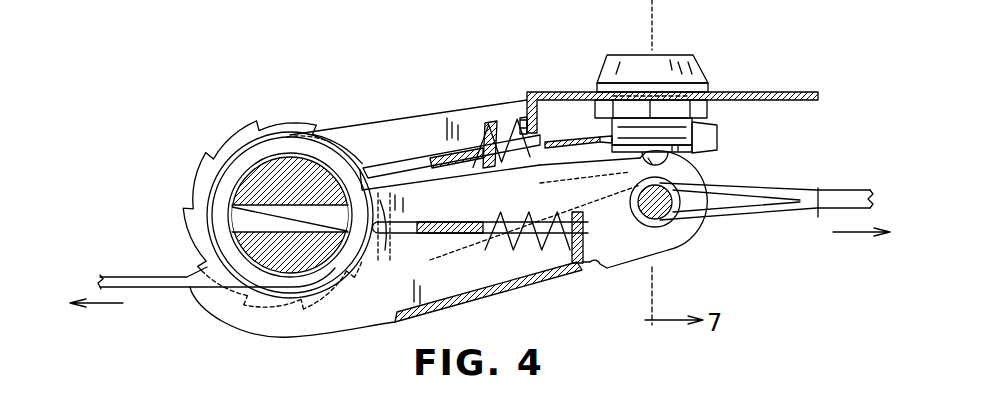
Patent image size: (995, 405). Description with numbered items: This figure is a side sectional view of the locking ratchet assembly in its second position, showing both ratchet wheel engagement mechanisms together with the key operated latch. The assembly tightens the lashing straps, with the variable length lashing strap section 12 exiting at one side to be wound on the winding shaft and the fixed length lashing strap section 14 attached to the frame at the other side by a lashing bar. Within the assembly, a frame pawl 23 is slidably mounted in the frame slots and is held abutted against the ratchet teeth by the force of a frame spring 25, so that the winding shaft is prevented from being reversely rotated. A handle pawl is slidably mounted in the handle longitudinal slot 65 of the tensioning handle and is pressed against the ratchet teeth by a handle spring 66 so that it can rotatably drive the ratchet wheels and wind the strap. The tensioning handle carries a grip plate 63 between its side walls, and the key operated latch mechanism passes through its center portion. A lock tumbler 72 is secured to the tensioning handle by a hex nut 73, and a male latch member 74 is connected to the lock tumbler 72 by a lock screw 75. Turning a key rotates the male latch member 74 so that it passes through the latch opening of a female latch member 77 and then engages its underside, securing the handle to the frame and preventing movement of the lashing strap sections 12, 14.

The variable length lashing strap section 12 is at (130, 277).
The fixed length lashing strap section 14 is at (835, 190).
The frame pawl 23 is at (398, 318).
The frame spring 25 is at (550, 270).
The grip plate 63 is at (806, 92).
The handle longitudinal slot 65 is at (397, 162).
The handle spring 66 is at (518, 128).
The lock tumbler 72 is at (708, 118).
The hex nut 73 is at (590, 108).
The male latch member 74 is at (680, 152).
The lock screw 75 is at (702, 220).
The female latch member 77 is at (718, 138).